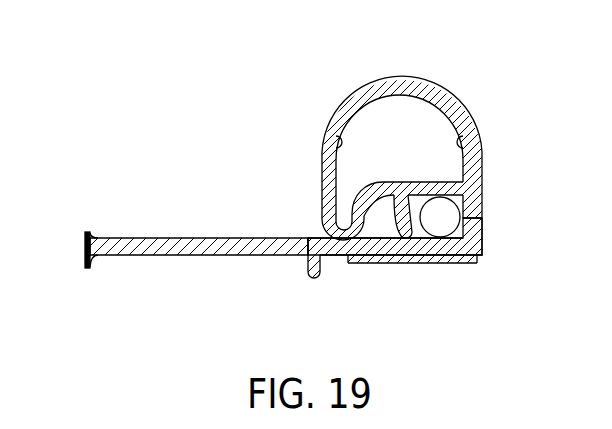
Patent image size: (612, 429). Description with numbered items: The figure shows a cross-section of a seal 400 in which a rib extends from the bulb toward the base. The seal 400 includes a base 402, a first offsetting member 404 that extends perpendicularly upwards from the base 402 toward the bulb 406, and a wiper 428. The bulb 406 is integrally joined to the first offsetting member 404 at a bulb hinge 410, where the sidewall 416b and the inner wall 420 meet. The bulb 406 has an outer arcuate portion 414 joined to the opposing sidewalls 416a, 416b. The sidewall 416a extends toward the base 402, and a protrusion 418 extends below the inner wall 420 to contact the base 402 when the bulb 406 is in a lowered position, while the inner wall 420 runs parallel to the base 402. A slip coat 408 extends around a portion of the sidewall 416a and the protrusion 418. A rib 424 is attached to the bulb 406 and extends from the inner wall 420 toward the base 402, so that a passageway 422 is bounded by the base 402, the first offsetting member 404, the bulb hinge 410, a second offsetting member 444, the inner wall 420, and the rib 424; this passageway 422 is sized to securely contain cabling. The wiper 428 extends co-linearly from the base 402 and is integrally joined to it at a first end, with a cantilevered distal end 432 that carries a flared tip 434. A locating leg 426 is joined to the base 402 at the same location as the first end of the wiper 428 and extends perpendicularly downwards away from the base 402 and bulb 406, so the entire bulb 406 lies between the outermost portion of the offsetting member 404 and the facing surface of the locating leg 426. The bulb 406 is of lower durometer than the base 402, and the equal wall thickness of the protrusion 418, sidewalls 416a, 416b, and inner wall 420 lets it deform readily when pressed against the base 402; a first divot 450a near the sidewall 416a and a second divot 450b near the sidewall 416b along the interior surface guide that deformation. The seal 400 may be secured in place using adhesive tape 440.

The seal 400 is at (285, 176).
The base 402 is at (446, 285).
The first offsetting member 404 is at (424, 275).
The bulb 406 is at (396, 168).
The slip coat 408 is at (322, 172).
The bulb hinge 410 is at (447, 218).
The outer arcuate portion 414 is at (401, 80).
The sidewall 416a is at (346, 100).
The sidewall 416b is at (463, 106).
The protrusion 418 is at (330, 242).
The inner wall 420 is at (417, 182).
The passageway 422 is at (475, 256).
The rib 424 is at (413, 238).
The locating leg 426 is at (314, 279).
The wiper 428 is at (163, 273).
The distal end 432 is at (86, 250).
The flared tip 434 is at (90, 260).
The adhesive tape 440 is at (366, 264).
The second offsetting member 444 is at (482, 192).
The first divot 450a is at (339, 140).
The second divot 450b is at (462, 140).